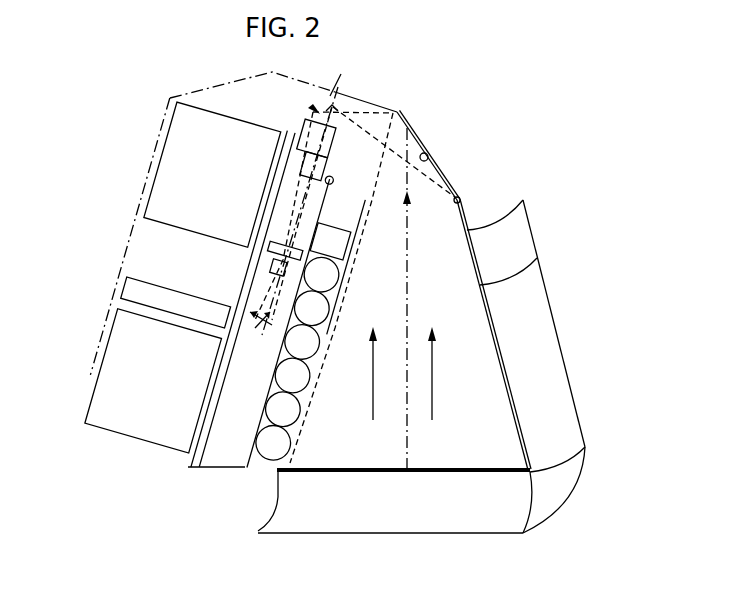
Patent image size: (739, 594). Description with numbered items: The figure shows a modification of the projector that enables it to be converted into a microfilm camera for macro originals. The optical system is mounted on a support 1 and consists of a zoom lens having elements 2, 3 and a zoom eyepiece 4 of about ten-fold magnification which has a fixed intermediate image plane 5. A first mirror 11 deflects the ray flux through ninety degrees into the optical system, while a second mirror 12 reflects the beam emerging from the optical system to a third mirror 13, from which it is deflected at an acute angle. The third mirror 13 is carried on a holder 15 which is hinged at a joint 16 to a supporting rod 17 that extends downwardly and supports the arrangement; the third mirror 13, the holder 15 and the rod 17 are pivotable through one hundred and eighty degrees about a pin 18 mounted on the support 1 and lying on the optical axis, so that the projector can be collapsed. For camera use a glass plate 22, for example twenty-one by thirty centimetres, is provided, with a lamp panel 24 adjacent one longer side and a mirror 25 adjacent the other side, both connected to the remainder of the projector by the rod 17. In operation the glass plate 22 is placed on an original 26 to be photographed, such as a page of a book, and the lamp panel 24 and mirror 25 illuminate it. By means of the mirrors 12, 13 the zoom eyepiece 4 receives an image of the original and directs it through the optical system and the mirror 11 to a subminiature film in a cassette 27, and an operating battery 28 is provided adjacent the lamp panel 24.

The support 1 is at (325, 202).
The zoom lens element 2 is at (270, 250).
The zoom lens element 3 is at (270, 270).
The zoom eyepiece 4 is at (328, 137).
The fixed intermediate image plane 5 is at (334, 183).
The first mirror 11 is at (294, 231).
The second mirror 12 is at (315, 110).
The third mirror 13 is at (428, 155).
The holder 15 is at (410, 118).
The joint 16 is at (460, 197).
The supporting rod 17 is at (537, 258).
The pin 18 is at (340, 82).
The glass plate 22 is at (443, 469).
The lamp panel 24 is at (303, 345).
The mirror 25 is at (503, 392).
The original 26 is at (288, 502).
The cassette 27 is at (145, 288).
The operating battery 28 is at (352, 244).